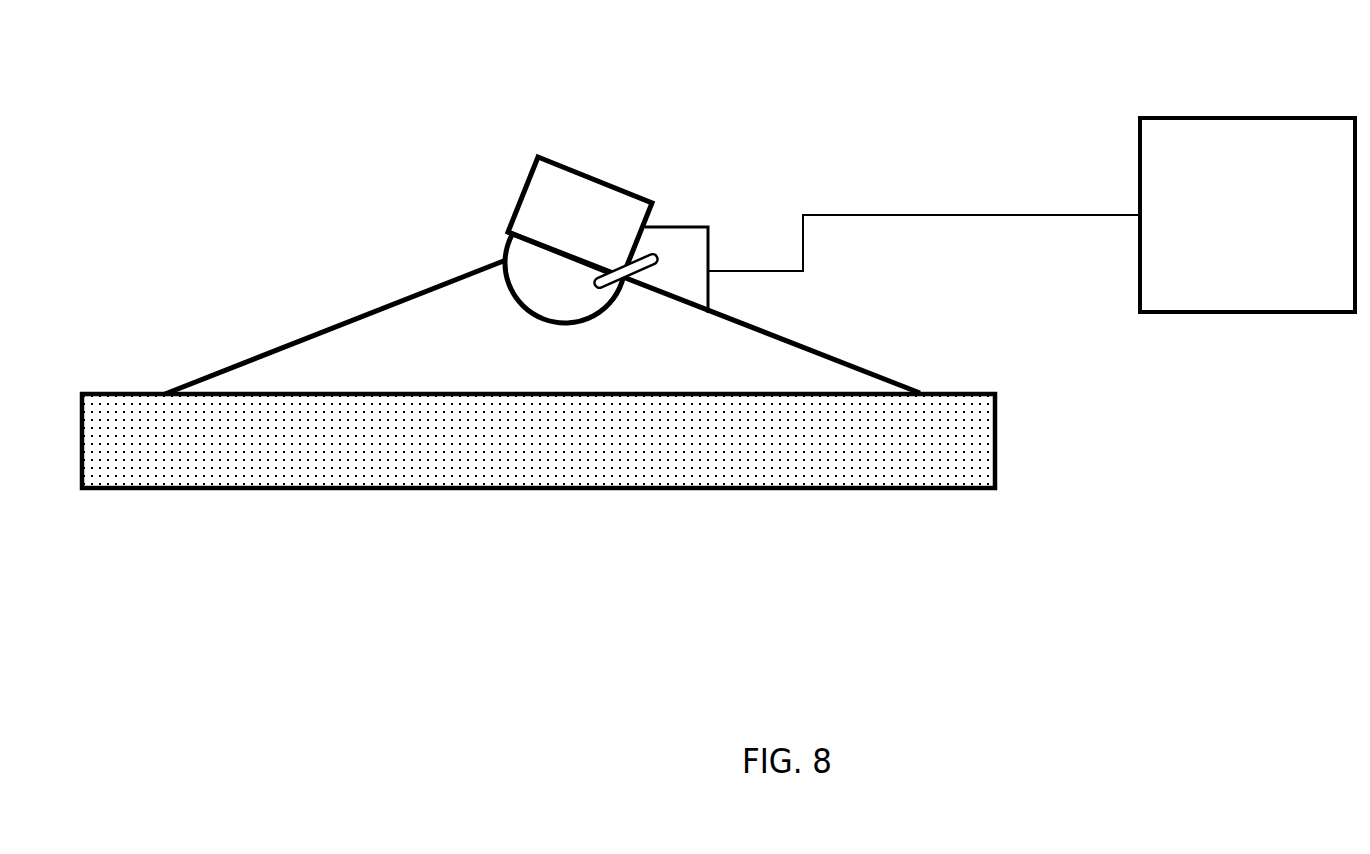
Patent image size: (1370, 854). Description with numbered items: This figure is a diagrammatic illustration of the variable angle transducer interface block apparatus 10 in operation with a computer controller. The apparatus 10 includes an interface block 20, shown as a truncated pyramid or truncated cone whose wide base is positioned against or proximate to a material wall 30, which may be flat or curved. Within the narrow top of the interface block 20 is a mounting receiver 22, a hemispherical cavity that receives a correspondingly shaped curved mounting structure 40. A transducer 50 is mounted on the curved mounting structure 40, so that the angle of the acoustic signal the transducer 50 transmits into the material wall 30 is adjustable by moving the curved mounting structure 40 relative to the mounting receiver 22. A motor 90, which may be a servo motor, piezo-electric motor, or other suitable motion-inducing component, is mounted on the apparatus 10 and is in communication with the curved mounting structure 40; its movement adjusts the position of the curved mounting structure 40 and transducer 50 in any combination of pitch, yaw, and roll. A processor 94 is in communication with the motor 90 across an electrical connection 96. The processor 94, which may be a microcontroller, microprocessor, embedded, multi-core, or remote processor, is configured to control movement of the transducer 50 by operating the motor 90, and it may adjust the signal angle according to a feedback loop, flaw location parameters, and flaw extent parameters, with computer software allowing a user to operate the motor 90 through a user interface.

The variable angle transducer interface block apparatus 10 is at (322, 140).
The interface block 20 is at (758, 355).
The mounting receiver 22 is at (494, 297).
The material wall 30 is at (120, 413).
The curved mounting structure 40 is at (530, 265).
The transducer 50 is at (603, 200).
The motor 90 is at (695, 240).
The processor 94 is at (1232, 130).
The electrical connection 96 is at (968, 217).